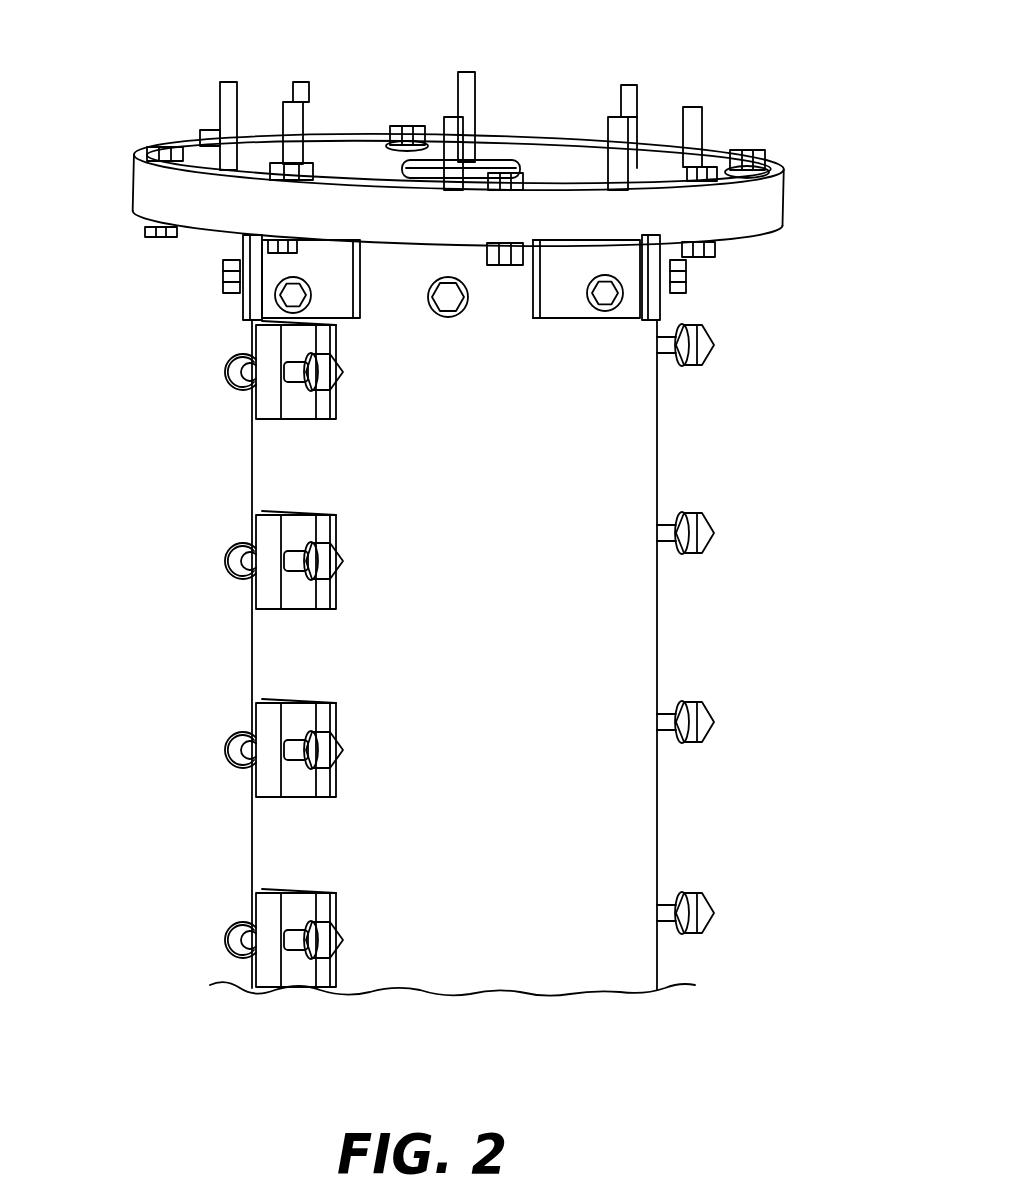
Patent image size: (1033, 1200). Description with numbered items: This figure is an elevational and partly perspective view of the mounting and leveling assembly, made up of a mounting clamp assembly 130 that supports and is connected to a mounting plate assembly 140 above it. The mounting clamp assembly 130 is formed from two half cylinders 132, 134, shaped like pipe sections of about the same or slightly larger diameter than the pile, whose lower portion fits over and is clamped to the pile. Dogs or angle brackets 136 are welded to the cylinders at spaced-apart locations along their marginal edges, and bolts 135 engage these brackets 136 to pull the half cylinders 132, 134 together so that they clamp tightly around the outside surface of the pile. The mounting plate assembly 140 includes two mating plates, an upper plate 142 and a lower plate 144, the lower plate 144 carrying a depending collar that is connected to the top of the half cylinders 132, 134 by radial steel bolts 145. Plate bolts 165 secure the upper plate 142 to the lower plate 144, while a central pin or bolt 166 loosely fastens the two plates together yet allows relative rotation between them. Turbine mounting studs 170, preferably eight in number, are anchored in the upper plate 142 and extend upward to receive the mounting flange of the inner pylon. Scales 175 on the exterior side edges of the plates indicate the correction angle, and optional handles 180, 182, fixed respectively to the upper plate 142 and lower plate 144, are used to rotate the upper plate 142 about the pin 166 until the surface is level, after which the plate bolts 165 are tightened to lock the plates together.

The mounting clamp assembly 130 is at (798, 623).
The half cylinder 132 is at (453, 617).
The half cylinder 134 is at (257, 462).
The bolts 135 is at (223, 558).
The angle brackets 136 is at (257, 725).
The mounting plate assembly 140 is at (479, 168).
The upper plate 142 is at (142, 178).
The lower plate 144 is at (135, 215).
The bolts 145 is at (690, 283).
The plate bolts 165 is at (407, 127).
The central pin or bolt 166 is at (482, 160).
The mounting studs 170 is at (695, 110).
The scales 175 is at (428, 333).
The handle 180 is at (195, 178).
The handle 182 is at (158, 215).